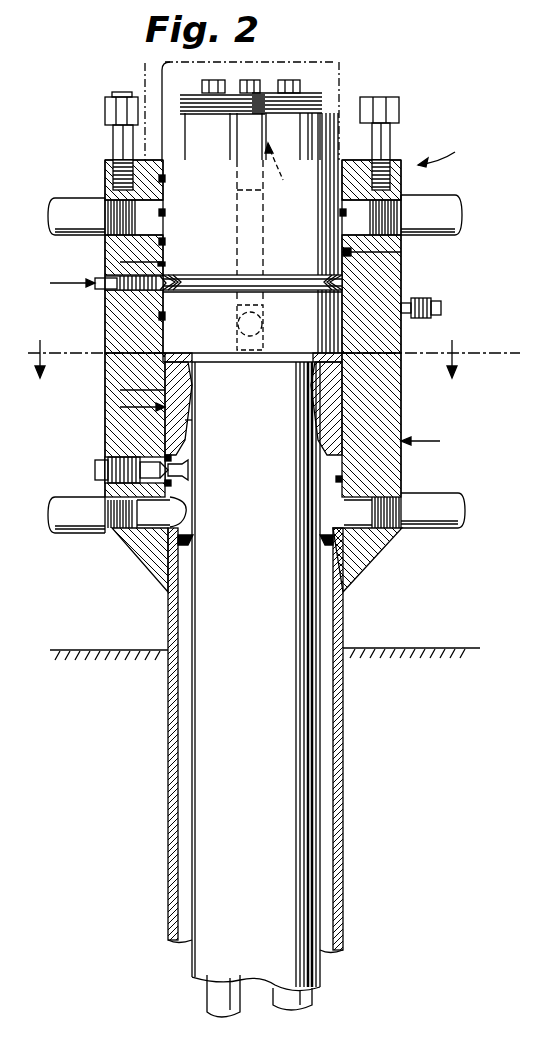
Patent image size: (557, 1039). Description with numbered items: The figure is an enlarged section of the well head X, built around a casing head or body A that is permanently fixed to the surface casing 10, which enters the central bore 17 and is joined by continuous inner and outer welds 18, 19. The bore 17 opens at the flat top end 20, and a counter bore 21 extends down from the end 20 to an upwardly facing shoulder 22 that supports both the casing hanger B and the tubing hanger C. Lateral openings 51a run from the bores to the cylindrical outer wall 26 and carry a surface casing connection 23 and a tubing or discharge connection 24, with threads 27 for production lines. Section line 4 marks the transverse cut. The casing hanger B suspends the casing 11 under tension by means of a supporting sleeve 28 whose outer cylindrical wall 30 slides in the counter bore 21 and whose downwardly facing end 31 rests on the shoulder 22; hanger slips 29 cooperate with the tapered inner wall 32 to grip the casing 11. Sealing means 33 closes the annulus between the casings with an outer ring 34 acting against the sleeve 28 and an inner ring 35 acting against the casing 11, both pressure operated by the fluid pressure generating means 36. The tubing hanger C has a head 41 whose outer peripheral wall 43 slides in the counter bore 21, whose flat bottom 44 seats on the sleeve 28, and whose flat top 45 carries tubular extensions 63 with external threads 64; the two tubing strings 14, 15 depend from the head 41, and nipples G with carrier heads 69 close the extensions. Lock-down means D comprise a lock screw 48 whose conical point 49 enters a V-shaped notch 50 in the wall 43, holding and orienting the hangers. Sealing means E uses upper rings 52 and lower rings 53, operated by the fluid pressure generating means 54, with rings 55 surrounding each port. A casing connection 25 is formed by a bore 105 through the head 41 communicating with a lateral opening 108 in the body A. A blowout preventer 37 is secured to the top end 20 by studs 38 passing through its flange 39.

The section line 4— 4 is at (260, 357).
The surface casing 10 is at (343, 900).
The casing 11 is at (310, 826).
The tubing string 14 is at (218, 998).
The tubing string 15 is at (302, 995).
The central bore 17 is at (180, 532).
The inner weld 18 is at (188, 545).
The outer weld 19 is at (166, 590).
The top end 20 is at (362, 158).
The counter bore 21 is at (340, 412).
The shoulder 22 is at (185, 487).
The surface casing connection 23 is at (75, 533).
The tubing or discharge connection 24 is at (74, 200).
The casing connection 25 is at (279, 172).
The cylindrical outer wall 26 is at (118, 368).
The threads 27 is at (400, 205).
The supporting sleeve 28 is at (120, 390).
The hanger slips 29 is at (190, 397).
The outer cylindrical wall 30 is at (365, 390).
The downwardly facing end 31 is at (175, 512).
The tapered inner wall 32 is at (192, 420).
The sealing means 33 is at (342, 479).
The outer ring 34 is at (165, 457).
The inner ring 35 is at (192, 468).
The fluid pressure generating means 36 is at (130, 483).
The blowout preventer 37 is at (145, 78).
The studs 38 is at (120, 147).
The flange 39 is at (112, 125).
The head 41 is at (160, 325).
The outer peripheral wall 43 is at (236, 230).
The flat bottom 44 is at (240, 350).
The flat top 45 is at (324, 157).
The lock screw 48 is at (128, 290).
The conical point 49 is at (166, 266).
The V-shaped notch 50 is at (282, 286).
The openings 51a is at (166, 213).
The upper rings 52 is at (166, 178).
The lower rings 53 is at (166, 318).
The fluid pressure generating means 54 is at (415, 300).
The rings 55 is at (166, 241).
The tubular extension 63 is at (186, 145).
The external thread 64 is at (182, 104).
The head 69 is at (220, 62).
The bore 105 is at (242, 267).
The lateral opening 108 is at (250, 358).
The casing head or body A is at (440, 441).
The casing hanger B is at (120, 407).
The tubing hanger C is at (120, 262).
The lock-down means D is at (50, 283).
The sealing means E is at (401, 252).
The flow controlling closures or nipples G is at (297, 76).
The well head X is at (460, 151).